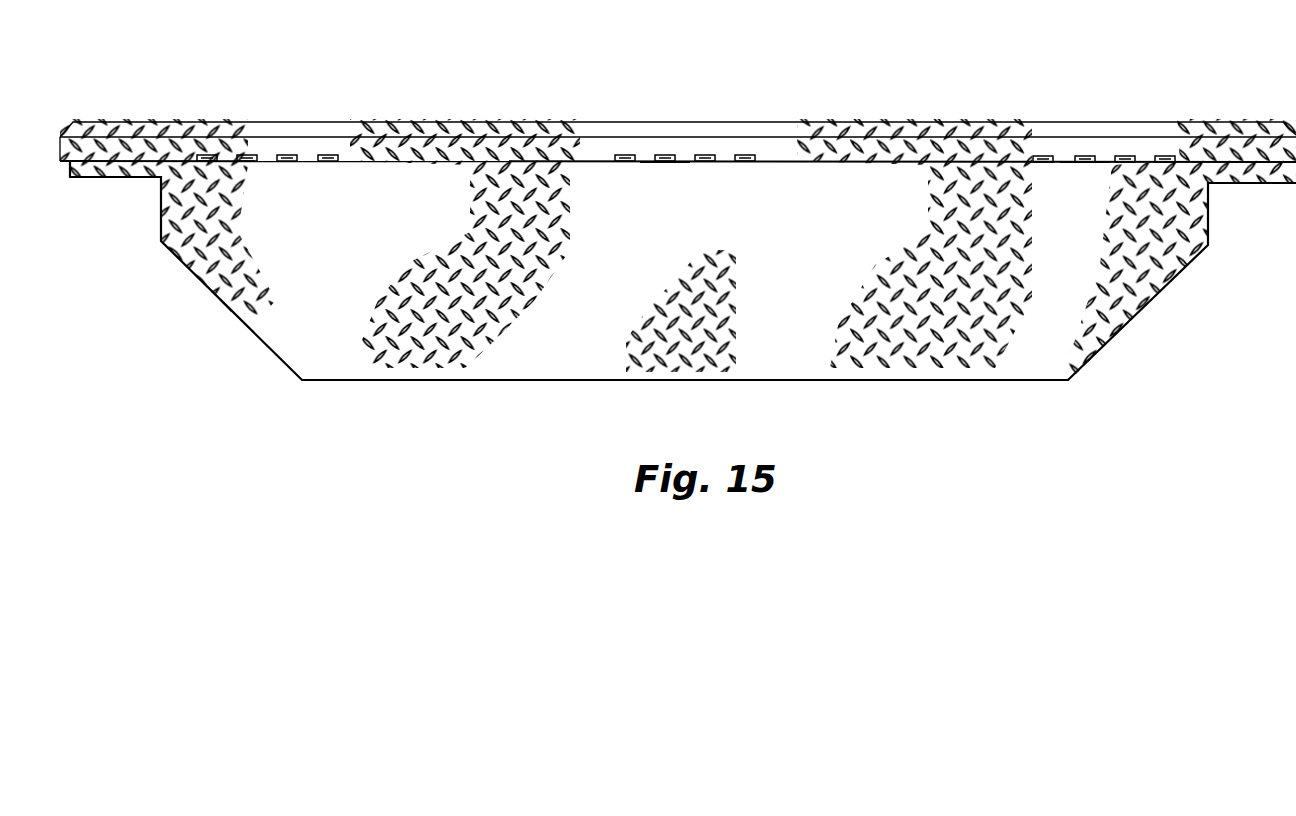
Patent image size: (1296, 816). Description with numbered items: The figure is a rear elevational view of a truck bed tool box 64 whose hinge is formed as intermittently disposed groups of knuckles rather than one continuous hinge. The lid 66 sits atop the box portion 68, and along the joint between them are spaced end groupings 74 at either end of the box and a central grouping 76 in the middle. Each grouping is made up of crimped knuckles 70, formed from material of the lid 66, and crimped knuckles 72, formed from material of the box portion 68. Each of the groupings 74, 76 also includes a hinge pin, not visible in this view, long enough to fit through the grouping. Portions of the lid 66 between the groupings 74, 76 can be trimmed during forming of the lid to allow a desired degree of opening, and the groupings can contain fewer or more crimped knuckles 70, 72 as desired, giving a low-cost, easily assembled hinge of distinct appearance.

The tool box 64 is at (674, 106).
The lid 66 is at (1028, 121).
The box portion 68 is at (1056, 358).
The crimped knuckles 70 is at (1143, 156).
The crimped knuckles 72 is at (1084, 181).
The spaced end groupings 74 is at (279, 181).
The central grouping 76 is at (665, 183).